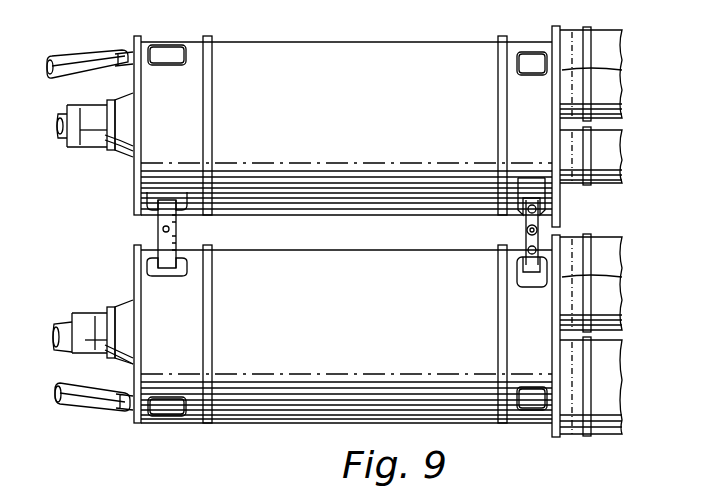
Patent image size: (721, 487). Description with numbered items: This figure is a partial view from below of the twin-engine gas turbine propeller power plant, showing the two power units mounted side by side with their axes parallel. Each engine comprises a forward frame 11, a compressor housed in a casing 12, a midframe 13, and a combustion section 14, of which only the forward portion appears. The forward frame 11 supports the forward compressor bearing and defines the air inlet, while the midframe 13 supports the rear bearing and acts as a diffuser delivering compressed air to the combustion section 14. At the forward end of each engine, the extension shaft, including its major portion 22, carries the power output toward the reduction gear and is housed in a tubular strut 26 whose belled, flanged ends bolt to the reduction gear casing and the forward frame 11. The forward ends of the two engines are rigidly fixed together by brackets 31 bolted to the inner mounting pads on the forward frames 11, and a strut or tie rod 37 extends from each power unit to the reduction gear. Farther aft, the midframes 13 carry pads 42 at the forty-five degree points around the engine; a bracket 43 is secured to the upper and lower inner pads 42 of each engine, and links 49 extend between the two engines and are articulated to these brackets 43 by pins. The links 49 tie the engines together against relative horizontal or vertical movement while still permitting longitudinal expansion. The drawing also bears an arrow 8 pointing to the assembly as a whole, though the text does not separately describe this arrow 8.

The tank assembly 8 is at (296, 423).
The forward frame 11 is at (190, 333).
The compressor casing 12 is at (312, 266).
The midframe 13 is at (520, 88).
The combustion section 14 is at (612, 398).
The major portion of the extension shaft 22 is at (65, 135).
The tubular column or strut 26 is at (88, 137).
The bracket 31 is at (166, 240).
The strut or tie rod 37 is at (72, 65).
The pad 42 is at (170, 408).
The bracket 43 is at (521, 178).
The link 49 is at (522, 227).